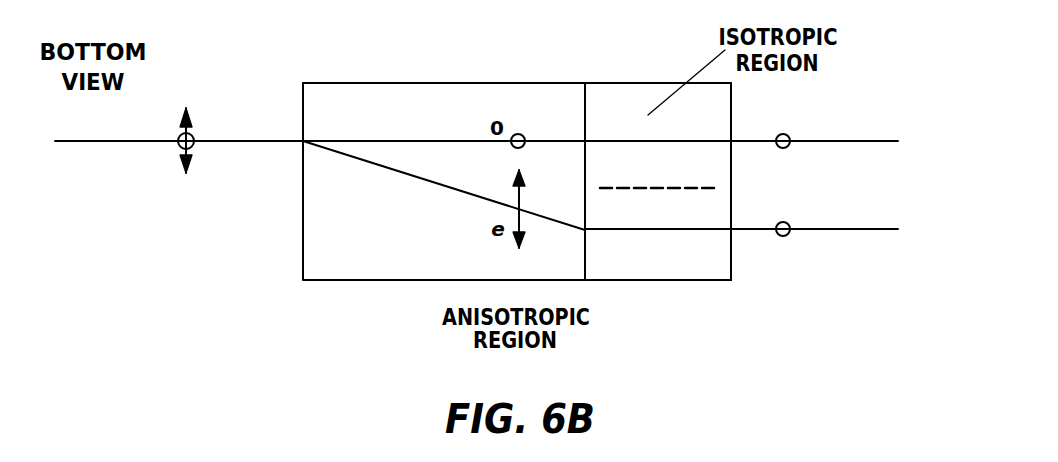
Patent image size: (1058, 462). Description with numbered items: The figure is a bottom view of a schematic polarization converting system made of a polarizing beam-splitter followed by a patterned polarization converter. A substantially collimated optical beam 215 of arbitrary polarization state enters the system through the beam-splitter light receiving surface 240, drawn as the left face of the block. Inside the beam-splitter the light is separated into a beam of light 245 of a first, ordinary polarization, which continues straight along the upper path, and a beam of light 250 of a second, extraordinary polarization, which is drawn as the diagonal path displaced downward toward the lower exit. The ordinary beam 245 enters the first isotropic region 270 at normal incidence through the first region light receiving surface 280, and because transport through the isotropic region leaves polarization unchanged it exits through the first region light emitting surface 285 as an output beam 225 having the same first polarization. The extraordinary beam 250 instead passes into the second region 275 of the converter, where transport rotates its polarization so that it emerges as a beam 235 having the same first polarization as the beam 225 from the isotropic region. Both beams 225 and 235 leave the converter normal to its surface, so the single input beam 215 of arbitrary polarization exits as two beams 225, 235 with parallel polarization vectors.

The substantially collimated optical beam 215 is at (125, 143).
The beam-splitter light receiving surface 240 is at (303, 248).
The beam of light of a first polarization 245 is at (398, 100).
The beam of light of a second polarization 250 is at (465, 193).
The first isotropic region 270 is at (613, 110).
The first region light receiving surface 280 is at (731, 106).
The output beam of the first polarization 225 is at (808, 137).
The output beam of the first polarization from the second region 235 is at (807, 229).
The second region 275 is at (708, 242).
The first region light emitting surface 285 is at (730, 233).